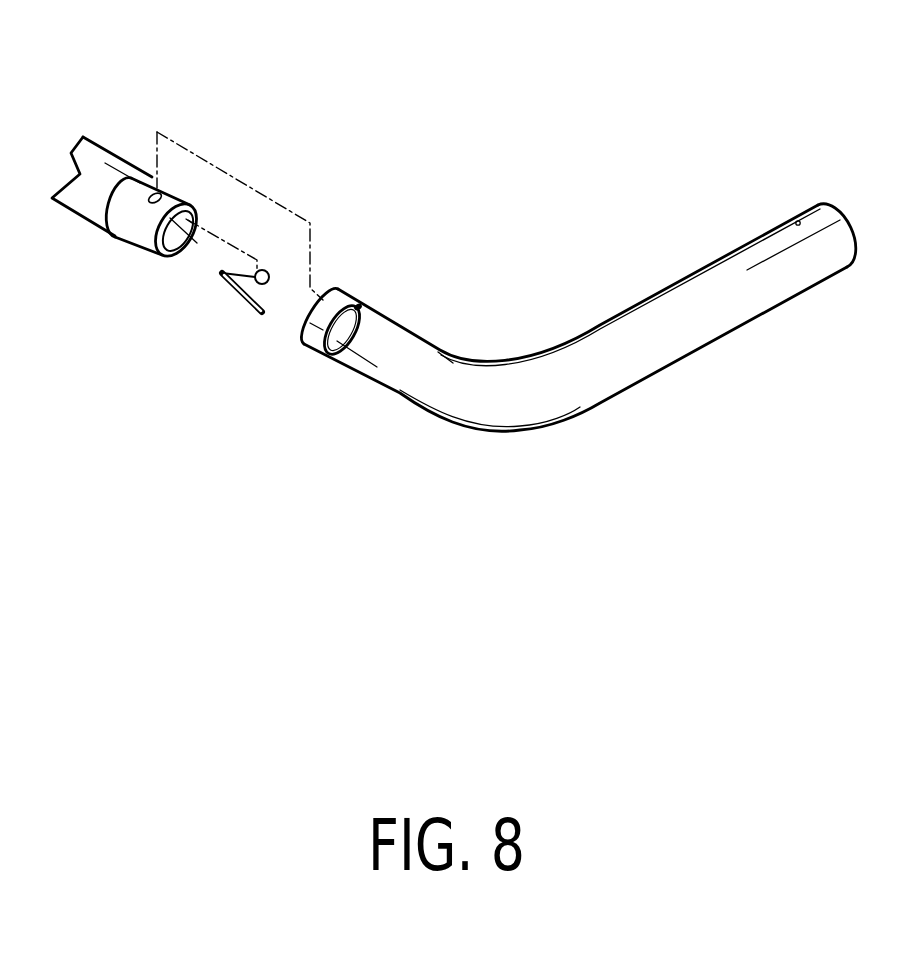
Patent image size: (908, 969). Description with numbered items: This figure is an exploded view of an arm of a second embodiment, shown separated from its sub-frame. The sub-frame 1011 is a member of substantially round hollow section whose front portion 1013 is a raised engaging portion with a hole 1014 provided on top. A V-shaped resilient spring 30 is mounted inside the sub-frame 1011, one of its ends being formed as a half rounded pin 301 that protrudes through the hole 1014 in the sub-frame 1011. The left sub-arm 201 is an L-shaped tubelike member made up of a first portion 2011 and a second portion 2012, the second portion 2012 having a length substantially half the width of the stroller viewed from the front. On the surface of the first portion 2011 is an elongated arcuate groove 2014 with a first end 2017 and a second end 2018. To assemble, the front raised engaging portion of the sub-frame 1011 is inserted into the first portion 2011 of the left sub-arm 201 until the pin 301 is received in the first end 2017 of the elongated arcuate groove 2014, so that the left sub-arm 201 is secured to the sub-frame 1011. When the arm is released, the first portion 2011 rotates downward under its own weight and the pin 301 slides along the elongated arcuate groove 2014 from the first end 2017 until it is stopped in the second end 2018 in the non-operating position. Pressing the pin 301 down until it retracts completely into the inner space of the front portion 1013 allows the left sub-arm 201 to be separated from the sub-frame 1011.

The sub-frame 1011 is at (95, 152).
The front portion 1013 is at (141, 220).
The hole 1014 is at (160, 190).
The V-shaped resilient spring 30 is at (215, 346).
The half rounded pin 301 is at (258, 316).
The elongated arcuate groove 2014 is at (590, 362).
The left sub-arm 201 is at (513, 422).
The first portion 2011 is at (453, 363).
The second portion 2012 is at (808, 268).
The second end 2018 is at (328, 348).
The first end 2017 is at (363, 312).